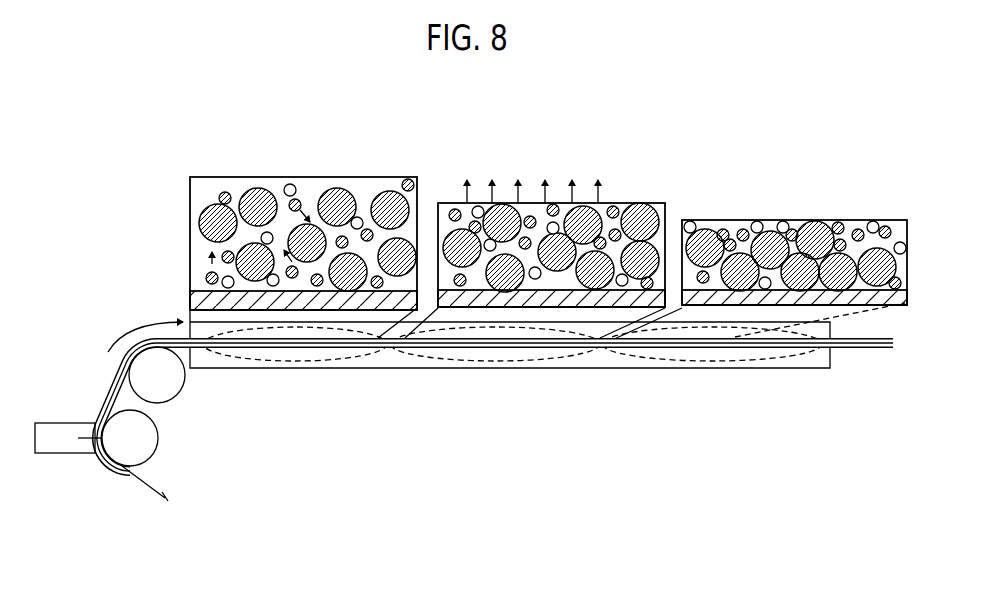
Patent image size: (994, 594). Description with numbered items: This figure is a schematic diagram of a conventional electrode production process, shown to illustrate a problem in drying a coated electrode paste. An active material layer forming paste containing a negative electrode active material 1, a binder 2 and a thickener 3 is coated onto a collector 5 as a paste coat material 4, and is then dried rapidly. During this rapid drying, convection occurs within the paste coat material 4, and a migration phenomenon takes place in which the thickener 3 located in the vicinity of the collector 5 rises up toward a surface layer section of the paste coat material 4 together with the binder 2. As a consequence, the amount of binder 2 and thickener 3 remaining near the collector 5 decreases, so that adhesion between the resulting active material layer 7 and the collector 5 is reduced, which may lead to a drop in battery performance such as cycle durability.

The negative electrode active material 1 is at (336, 188).
The binder 2 is at (222, 192).
The thickener 3 is at (290, 184).
The paste coat material 4 is at (273, 176).
The collector 5 is at (206, 348).
The active material layer 7 is at (756, 221).